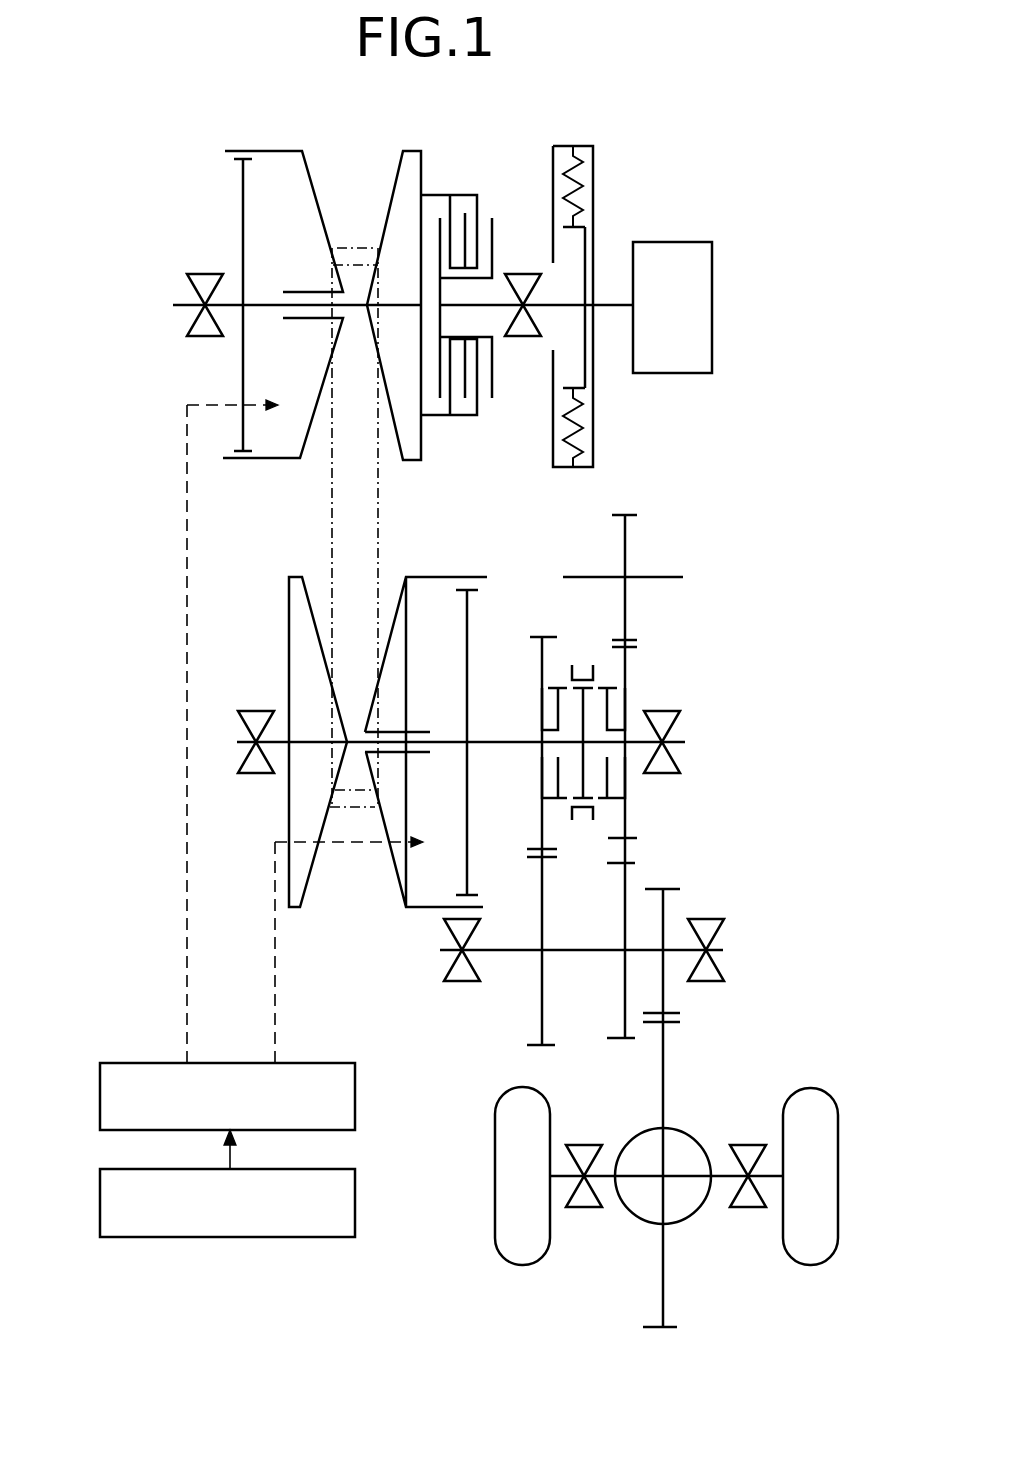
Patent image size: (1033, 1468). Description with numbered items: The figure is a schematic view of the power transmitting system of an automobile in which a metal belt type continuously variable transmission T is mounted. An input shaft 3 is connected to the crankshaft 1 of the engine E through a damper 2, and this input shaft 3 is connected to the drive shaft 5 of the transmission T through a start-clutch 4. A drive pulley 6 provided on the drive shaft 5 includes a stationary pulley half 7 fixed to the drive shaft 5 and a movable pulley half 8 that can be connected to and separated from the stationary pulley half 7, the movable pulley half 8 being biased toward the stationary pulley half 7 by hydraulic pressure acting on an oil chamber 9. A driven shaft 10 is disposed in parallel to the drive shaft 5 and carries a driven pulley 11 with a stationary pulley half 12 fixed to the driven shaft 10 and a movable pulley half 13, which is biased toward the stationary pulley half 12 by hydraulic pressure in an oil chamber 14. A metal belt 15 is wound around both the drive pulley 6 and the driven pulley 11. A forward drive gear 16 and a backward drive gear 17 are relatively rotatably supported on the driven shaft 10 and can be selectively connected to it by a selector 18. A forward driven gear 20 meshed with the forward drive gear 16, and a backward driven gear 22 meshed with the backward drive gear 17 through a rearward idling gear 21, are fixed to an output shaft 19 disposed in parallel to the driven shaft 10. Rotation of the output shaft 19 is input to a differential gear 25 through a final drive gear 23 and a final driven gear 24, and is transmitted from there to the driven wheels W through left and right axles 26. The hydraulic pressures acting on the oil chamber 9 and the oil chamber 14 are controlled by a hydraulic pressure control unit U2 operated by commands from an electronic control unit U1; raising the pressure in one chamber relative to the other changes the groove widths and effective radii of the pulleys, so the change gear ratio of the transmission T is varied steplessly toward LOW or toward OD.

The crankshaft 1 is at (610, 312).
The damper 2 is at (606, 186).
The input shaft 3 is at (547, 305).
The start-clutch 4 is at (466, 188).
The drive shaft 5 is at (259, 302).
The drive pulley 6 is at (322, 281).
The stationary pulley half 7 is at (405, 185).
The movable pulley half 8 is at (312, 185).
The oil chamber 9 is at (296, 377).
The driven shaft 10 is at (520, 742).
The driven pulley 11 is at (359, 779).
The stationary pulley half 12 is at (290, 617).
The movable pulley half 13 is at (402, 610).
The oil chamber 14 is at (458, 828).
The metal belt 15 is at (378, 532).
The forward drive gear 16 is at (532, 636).
The backward drive gear 17 is at (633, 652).
The selector 18 is at (580, 822).
The output shaft 19 is at (563, 948).
The forward driven gear 20 is at (547, 1047).
The rearward idling gear 21 is at (633, 513).
The backward driven gear 22 is at (612, 1042).
The final drive gear 23 is at (672, 888).
The final driven gear 24 is at (670, 1023).
The differential gear 25 is at (690, 1134).
The axle 26 is at (600, 1178).
The metal belt type continuously variable transmission T is at (276, 522).
The engine E is at (682, 318).
The driven wheel W is at (495, 1230).
The electronic control unit U1 is at (357, 1190).
The hydraulic pressure control unit U2 is at (357, 1107).